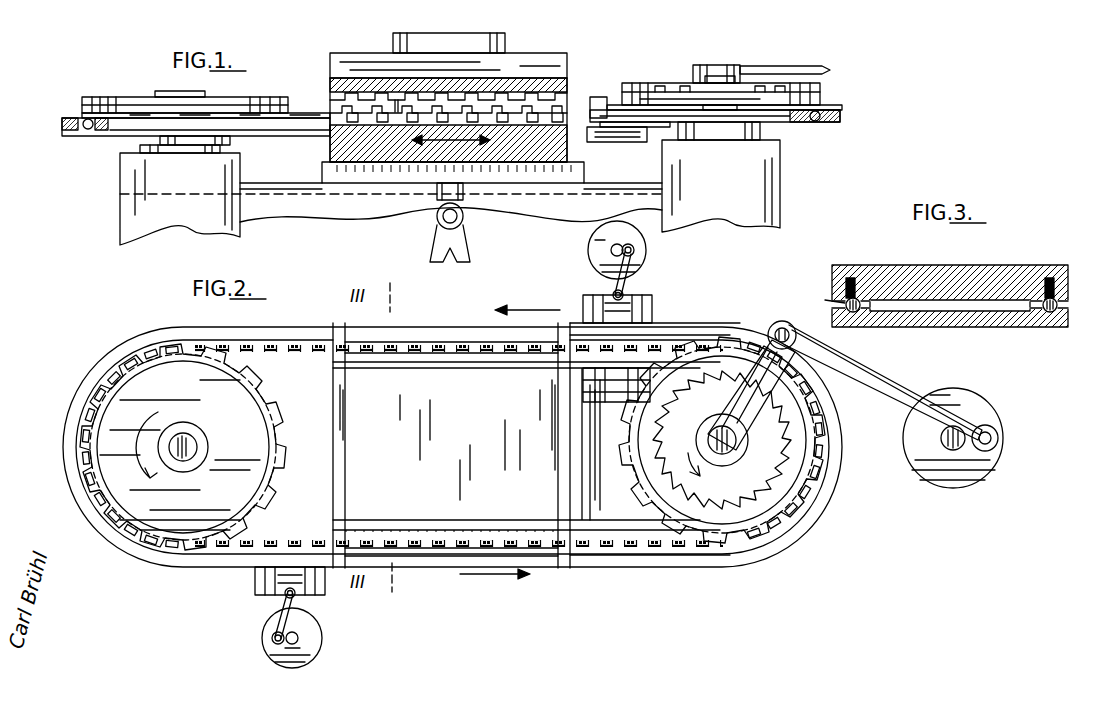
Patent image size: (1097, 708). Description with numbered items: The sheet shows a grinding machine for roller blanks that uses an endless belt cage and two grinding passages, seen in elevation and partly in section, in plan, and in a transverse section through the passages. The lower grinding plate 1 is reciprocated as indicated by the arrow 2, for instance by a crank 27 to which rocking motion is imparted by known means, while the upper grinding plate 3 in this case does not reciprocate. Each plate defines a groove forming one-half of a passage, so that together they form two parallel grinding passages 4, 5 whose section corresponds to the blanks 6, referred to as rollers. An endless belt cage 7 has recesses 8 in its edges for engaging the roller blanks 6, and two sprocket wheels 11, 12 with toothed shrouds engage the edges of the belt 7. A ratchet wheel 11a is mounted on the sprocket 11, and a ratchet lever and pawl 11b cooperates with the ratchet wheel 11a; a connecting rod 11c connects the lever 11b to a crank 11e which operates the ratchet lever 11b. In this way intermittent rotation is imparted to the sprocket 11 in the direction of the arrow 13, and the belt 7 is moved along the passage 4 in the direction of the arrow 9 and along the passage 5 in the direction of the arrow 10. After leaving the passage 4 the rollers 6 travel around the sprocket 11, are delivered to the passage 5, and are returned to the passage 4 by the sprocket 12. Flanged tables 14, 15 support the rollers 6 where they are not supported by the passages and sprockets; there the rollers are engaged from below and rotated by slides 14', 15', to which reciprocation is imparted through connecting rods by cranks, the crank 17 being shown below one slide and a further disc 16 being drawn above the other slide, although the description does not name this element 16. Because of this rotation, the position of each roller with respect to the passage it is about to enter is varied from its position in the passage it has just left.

In FIG. 1, the lower grinding plate 1 is at (330, 134).
In FIG. 2, the lower grinding plate 1 is at (368, 336).
In FIG. 3, the lower grinding plate 1 is at (872, 312).
In FIG. 1, the arrow 2 is at (440, 150).
In FIG. 1, the upper grinding plate 3 is at (558, 88).
In FIG. 3, the upper grinding plate 3 is at (860, 276).
In FIG. 1, the grinding passage 4 is at (330, 146).
In FIG. 2, the grinding passage 4 is at (506, 540).
In FIG. 3, the grinding passage 4 is at (1040, 311).
In FIG. 1, the grinding passage 5 is at (566, 104).
In FIG. 2, the grinding passage 5 is at (462, 343).
In FIG. 3, the grinding passage 5 is at (831, 292).
In FIG. 1, the roller blanks 6 is at (814, 121).
In FIG. 2, the roller blanks 6 is at (304, 344).
In FIG. 3, the roller blanks 6 is at (851, 313).
In FIG. 1, the endless belt cage 7 is at (82, 112).
In FIG. 3, the endless belt cage 7 is at (1054, 277).
In FIG. 1, the recesses 8 is at (604, 85).
In FIG. 2, the arrow 9 is at (495, 584).
In FIG. 2, the arrow 10 is at (527, 299).
In FIG. 1, the sprocket wheel 11 is at (650, 96).
In FIG. 1, the ratchet wheel 11a is at (648, 96).
In FIG. 2, the ratchet wheel 11a is at (820, 440).
In FIG. 2, the ratchet lever and pawl 11b is at (778, 326).
In FIG. 1, the connecting rod 11c is at (826, 64).
In FIG. 2, the connecting rod 11c is at (900, 390).
In FIG. 2, the crank 11e is at (996, 460).
In FIG. 1, the sprocket wheel 12 is at (130, 104).
In FIG. 2, the sprocket wheel 12 is at (137, 530).
In FIG. 1, the arrow 13 is at (750, 98).
In FIG. 2, the arrow 13 is at (722, 440).
In FIG. 1, the flanged table 14 is at (635, 135).
In FIG. 2, the flanged table 14 is at (638, 439).
In FIG. 1, the slide 14' is at (617, 149).
In FIG. 2, the slide 14' is at (617, 359).
In FIG. 1, the flanged table 15 is at (222, 147).
In FIG. 2, the flanged table 15 is at (235, 447).
In FIG. 2, the slide 15' is at (272, 582).
In FIG. 2, the upper eccentric disc 16 is at (648, 250).
In FIG. 2, the crank 17 is at (318, 630).
In FIG. 1, the crank 27 is at (440, 256).